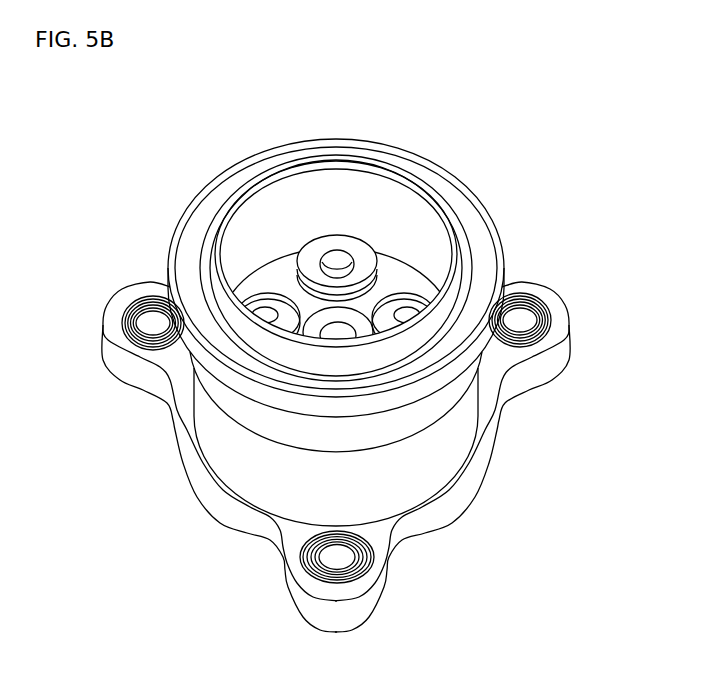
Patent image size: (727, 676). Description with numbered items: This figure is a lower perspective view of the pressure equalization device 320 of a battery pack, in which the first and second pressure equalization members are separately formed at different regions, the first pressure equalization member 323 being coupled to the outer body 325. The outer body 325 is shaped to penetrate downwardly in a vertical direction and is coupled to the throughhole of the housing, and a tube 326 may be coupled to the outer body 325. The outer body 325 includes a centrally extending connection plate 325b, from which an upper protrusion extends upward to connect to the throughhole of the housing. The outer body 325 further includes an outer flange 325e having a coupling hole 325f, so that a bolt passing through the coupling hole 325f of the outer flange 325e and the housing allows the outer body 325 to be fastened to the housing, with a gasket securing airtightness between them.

The pressure equalization device 320 is at (502, 159).
The first pressure equalization member 323 is at (330, 235).
The outer body 325 is at (260, 463).
The connection plate 325b is at (277, 274).
The outer flange 325e is at (560, 353).
The coupling hole 325f is at (517, 327).
The tube 326 is at (247, 388).